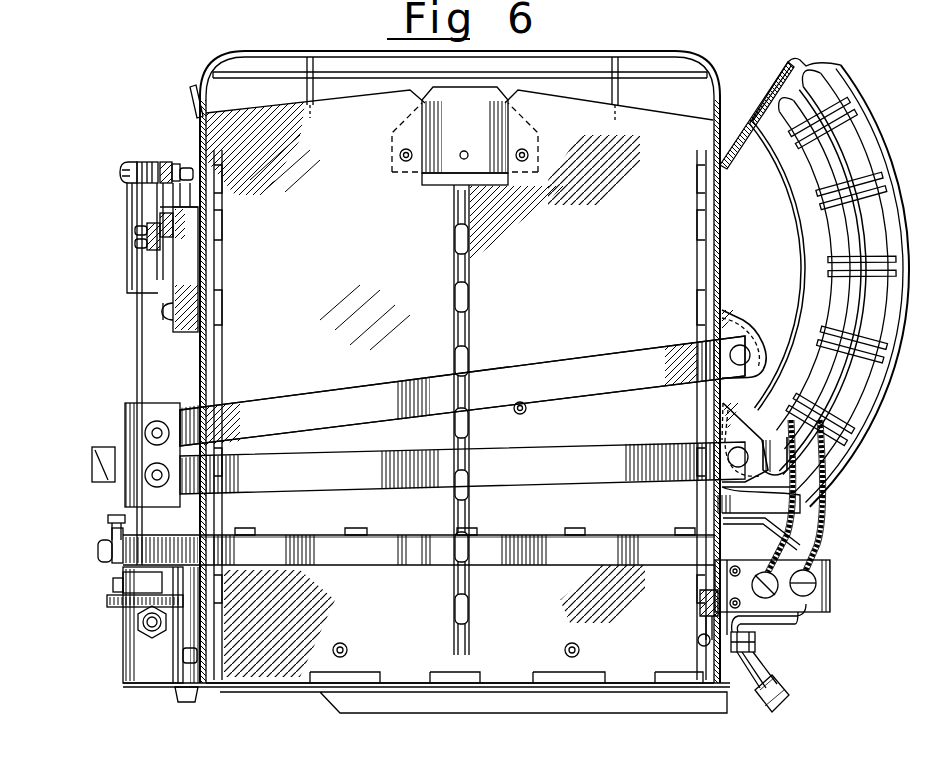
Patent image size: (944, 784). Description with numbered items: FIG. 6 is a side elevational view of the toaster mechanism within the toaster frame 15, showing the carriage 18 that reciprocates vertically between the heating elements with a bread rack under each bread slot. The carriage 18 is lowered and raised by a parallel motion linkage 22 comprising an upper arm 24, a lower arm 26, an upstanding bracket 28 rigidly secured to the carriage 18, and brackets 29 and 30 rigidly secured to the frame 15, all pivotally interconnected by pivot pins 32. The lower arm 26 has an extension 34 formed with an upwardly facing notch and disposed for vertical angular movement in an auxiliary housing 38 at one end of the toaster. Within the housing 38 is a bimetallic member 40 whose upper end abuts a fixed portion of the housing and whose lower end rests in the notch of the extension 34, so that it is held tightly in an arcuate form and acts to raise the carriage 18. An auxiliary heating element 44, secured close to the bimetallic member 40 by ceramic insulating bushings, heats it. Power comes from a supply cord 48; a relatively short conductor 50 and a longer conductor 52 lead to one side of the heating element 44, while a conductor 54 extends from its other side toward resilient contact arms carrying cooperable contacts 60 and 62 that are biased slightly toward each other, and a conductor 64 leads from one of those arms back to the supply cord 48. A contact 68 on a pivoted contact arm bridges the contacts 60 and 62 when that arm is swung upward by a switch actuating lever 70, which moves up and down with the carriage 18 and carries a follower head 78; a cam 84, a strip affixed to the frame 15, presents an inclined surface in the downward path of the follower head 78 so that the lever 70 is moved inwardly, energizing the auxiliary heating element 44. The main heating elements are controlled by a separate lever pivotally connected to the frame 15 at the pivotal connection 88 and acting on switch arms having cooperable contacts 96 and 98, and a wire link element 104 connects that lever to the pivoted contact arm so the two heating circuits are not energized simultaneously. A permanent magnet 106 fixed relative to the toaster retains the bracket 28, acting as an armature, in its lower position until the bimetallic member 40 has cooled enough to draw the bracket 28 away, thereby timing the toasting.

The toaster frame 15 is at (228, 50).
The carriage 18 is at (397, 537).
The parallel motion linkage 22 is at (522, 362).
The upper arm 24 is at (342, 395).
The lower arm 26 is at (568, 452).
The upstanding bracket 28 is at (132, 403).
The bracket 29 is at (740, 330).
The bracket 30 is at (733, 427).
The pivot pins 32 is at (750, 355).
The extension 34 is at (778, 482).
The auxiliary housing 38 is at (860, 93).
The bimetallic member 40 is at (863, 225).
The auxiliary heating element 44 is at (867, 387).
The supply cord 48 is at (787, 683).
The conductor 50 is at (802, 620).
The conductor 52 is at (826, 497).
The conductor 54 is at (818, 518).
The contact 60 is at (138, 253).
The contact 62 is at (153, 273).
The conductor 64 is at (702, 608).
The contact 68 is at (157, 273).
The switch actuating lever 70 is at (280, 534).
The follower head 78 is at (110, 518).
The cam 84 is at (92, 462).
The pivotal connection 88 is at (98, 553).
The contact 96 is at (112, 597).
The contact 98 is at (117, 610).
The wire link element 104 is at (137, 325).
The permanent magnet 106 is at (137, 583).